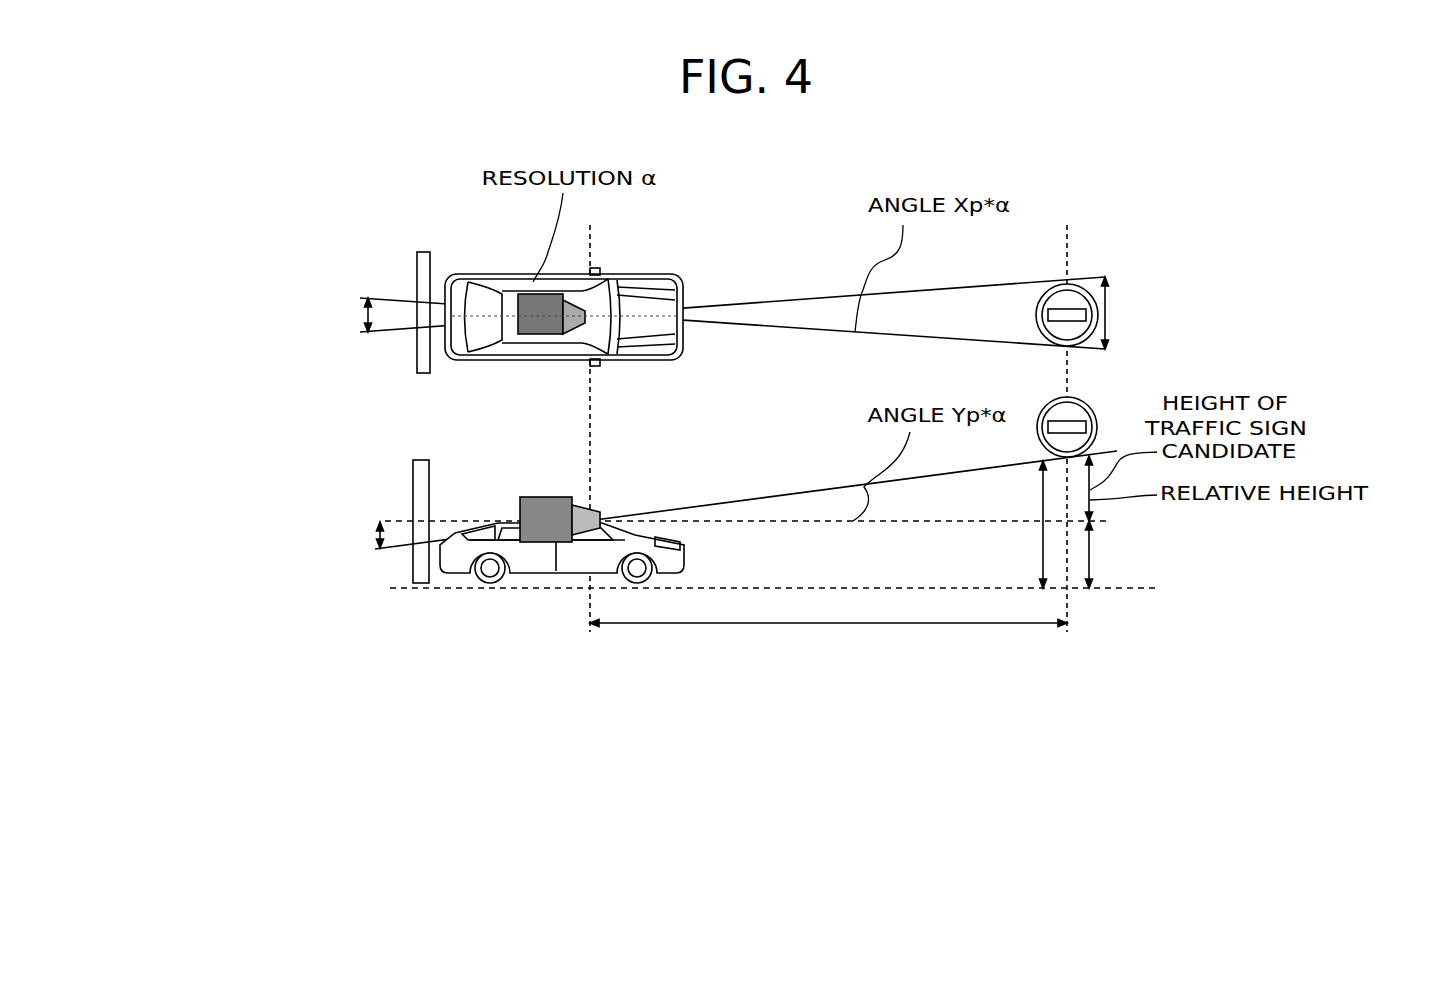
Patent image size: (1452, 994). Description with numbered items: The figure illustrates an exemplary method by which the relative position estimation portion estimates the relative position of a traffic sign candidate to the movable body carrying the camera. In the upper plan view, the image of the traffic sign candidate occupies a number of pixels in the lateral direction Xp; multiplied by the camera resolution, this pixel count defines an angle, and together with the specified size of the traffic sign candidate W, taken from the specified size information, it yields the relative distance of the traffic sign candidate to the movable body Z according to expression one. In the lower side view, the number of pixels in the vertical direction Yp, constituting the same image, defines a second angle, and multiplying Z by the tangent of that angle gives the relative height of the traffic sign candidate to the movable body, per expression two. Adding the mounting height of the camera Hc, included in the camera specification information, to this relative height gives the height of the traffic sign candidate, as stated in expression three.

The number of pixels in the lateral direction Xp is at (360, 313).
The number of pixels in the vertical direction Yp is at (375, 536).
The specified size of the traffic sign candidate W is at (1108, 303).
The mounting height of the camera Hc is at (1090, 566).
The relative distance of the traffic sign candidate to the movable body Z is at (797, 625).